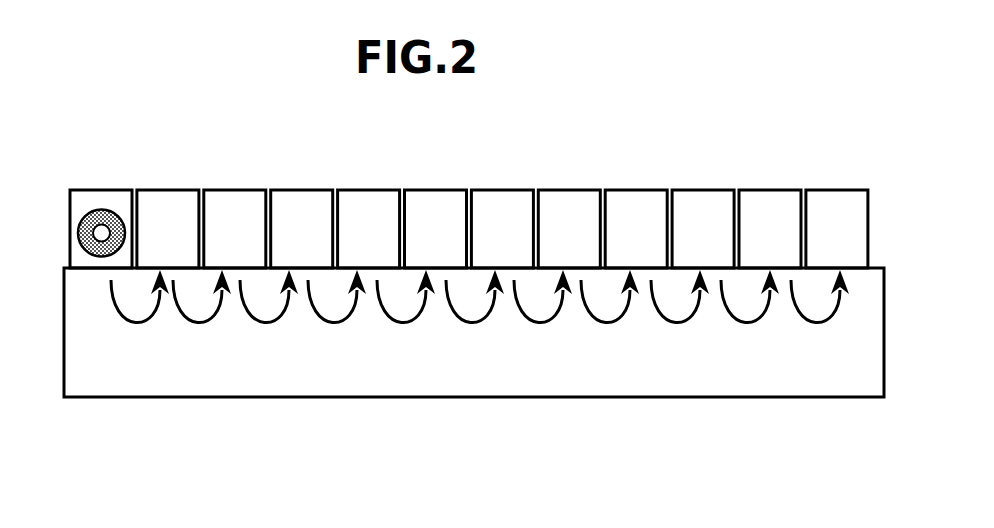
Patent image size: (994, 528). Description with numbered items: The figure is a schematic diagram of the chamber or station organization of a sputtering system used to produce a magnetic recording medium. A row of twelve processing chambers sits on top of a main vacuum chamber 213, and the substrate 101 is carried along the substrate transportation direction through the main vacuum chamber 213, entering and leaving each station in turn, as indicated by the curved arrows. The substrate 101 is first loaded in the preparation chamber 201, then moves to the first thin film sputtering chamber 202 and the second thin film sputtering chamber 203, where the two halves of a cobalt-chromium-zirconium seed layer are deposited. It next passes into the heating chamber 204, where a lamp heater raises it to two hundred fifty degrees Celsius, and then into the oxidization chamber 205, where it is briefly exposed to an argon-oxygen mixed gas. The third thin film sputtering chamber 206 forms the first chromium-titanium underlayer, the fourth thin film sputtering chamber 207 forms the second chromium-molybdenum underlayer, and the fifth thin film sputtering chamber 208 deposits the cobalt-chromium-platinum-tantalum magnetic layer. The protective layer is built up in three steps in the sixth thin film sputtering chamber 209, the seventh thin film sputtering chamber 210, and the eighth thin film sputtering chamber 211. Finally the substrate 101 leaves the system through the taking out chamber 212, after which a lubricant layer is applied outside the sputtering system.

The substrate 101 is at (97, 258).
The main vacuum chamber 213 is at (802, 372).
The preparation chamber 201 is at (101, 200).
The 1st thin film sputtering chamber 202 is at (168, 200).
The 2nd thin film sputtering chamber 203 is at (235, 200).
The heating chamber 204 is at (302, 200).
The oxidization chamber 205 is at (369, 200).
The 3rd thin film sputtering chamber 206 is at (436, 200).
The 4th thin film sputtering chamber 207 is at (502, 200).
The 5th thin film sputtering chamber 208 is at (569, 200).
The 6th thin film sputtering chamber 209 is at (636, 200).
The 7th thin film sputtering chamber 210 is at (703, 200).
The 8th thin film sputtering chamber 211 is at (770, 200).
The taking out chamber 212 is at (837, 200).